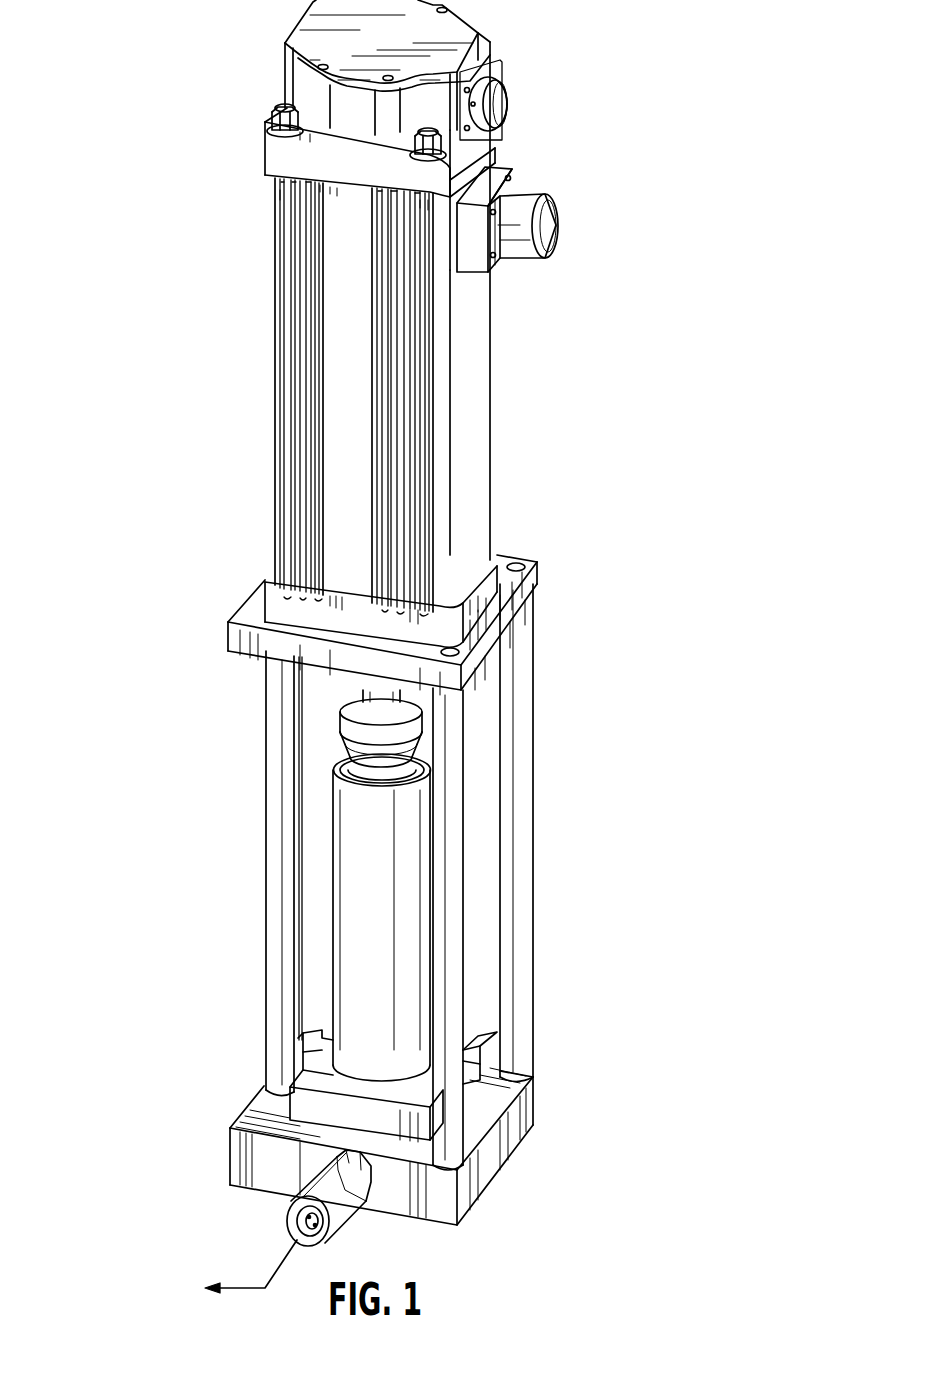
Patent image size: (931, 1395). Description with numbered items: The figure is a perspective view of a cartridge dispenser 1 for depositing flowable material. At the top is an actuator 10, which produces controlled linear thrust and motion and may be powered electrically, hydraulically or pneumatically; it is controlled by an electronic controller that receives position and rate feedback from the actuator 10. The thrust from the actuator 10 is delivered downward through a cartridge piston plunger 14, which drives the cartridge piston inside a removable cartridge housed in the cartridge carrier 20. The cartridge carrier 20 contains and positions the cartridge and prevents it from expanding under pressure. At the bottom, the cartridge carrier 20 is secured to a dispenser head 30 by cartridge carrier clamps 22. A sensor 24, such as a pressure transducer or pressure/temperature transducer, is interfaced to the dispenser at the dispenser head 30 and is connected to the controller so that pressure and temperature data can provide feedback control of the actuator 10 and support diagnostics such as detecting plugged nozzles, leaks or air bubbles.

The cartridge dispenser 1 is at (648, 258).
The actuator 10 is at (477, 362).
The cartridge piston plunger 14 is at (340, 713).
The cartridge carrier 20 is at (342, 890).
The cartridge carrier clamps 22 is at (305, 1075).
The sensor 24 is at (343, 1218).
The dispenser head 30 is at (533, 1110).